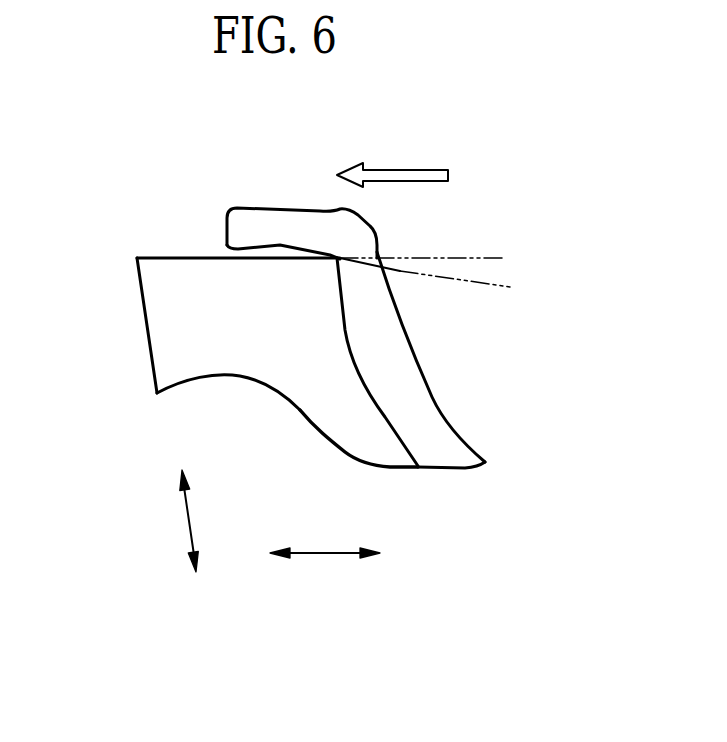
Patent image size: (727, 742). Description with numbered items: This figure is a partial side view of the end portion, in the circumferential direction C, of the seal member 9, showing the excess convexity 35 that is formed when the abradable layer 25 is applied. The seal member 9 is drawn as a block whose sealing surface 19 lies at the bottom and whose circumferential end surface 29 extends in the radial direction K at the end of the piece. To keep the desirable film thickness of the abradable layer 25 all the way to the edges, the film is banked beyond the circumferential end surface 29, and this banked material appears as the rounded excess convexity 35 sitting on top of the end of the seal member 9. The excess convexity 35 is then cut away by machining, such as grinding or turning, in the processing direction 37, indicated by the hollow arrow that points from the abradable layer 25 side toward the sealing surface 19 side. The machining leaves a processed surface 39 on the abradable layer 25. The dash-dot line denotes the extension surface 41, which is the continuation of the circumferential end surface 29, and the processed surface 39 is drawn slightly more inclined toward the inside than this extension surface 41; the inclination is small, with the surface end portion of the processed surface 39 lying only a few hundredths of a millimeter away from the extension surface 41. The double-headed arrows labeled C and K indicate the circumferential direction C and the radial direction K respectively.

The seal member 9 is at (167, 323).
The sealing surface 19 is at (355, 372).
The abradable layer 25 is at (418, 412).
The circumferential end surface 29 is at (178, 258).
The excess convexity 35 is at (272, 228).
The processing direction 37 is at (402, 170).
The processed surface 39 is at (365, 262).
The extension surface 41 is at (488, 259).
The circumferential direction C is at (183, 523).
The radial direction K is at (323, 555).